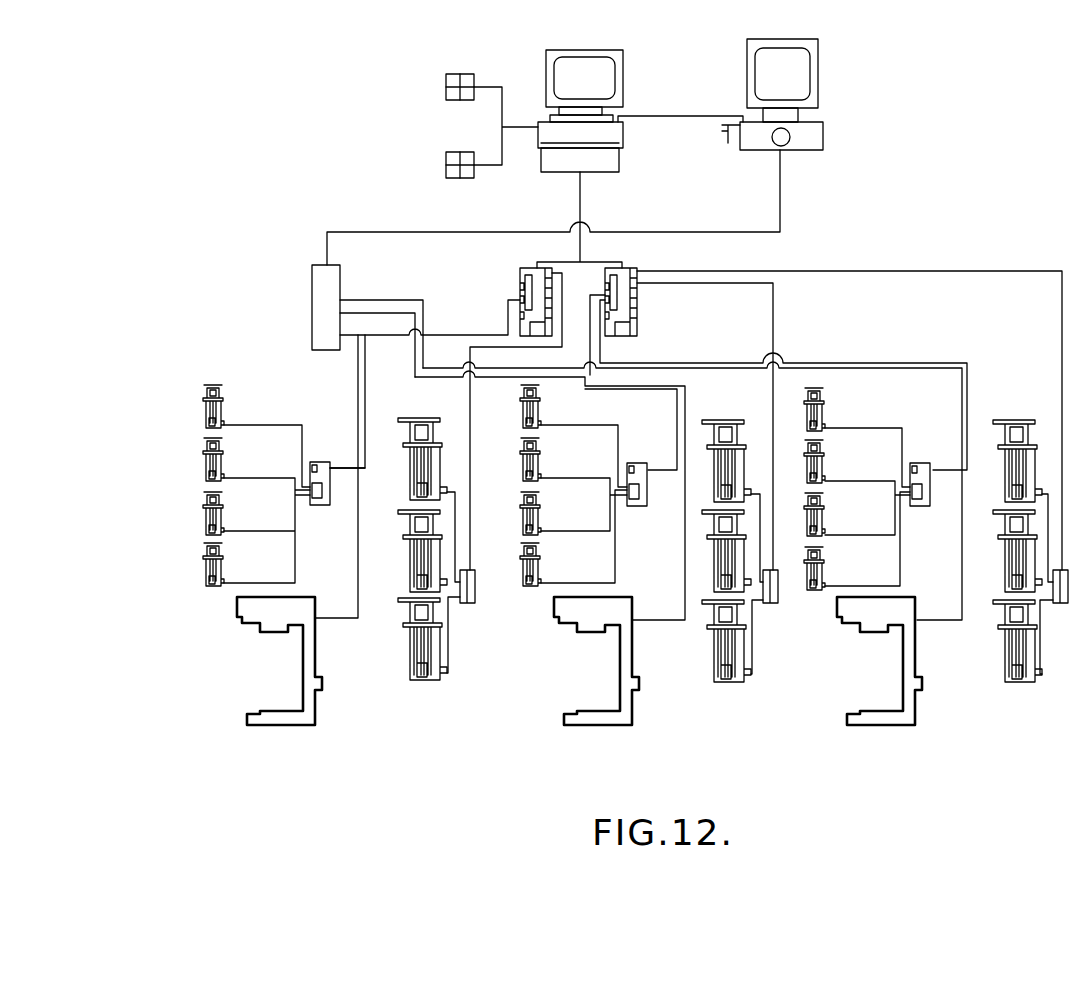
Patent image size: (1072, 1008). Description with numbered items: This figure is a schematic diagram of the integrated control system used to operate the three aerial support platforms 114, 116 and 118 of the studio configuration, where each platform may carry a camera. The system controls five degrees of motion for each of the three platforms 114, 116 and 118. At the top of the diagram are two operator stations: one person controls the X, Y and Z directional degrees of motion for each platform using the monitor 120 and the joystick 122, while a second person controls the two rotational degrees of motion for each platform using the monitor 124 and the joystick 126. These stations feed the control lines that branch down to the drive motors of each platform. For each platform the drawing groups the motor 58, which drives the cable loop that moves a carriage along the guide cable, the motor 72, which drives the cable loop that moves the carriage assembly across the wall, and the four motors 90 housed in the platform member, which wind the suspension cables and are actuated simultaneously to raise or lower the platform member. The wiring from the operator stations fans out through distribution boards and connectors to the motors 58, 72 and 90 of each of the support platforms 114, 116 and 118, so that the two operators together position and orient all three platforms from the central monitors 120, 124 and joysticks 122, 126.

The monitor 120 is at (585, 72).
The joystick 122 is at (446, 166).
The monitor 124 is at (788, 76).
The joystick 126 is at (807, 137).
The motors 90 is at (212, 416).
The motor 58 is at (420, 457).
The motor 72 is at (415, 641).
The support platform 114 is at (263, 720).
The support platform 116 is at (580, 720).
The support platform 118 is at (866, 720).